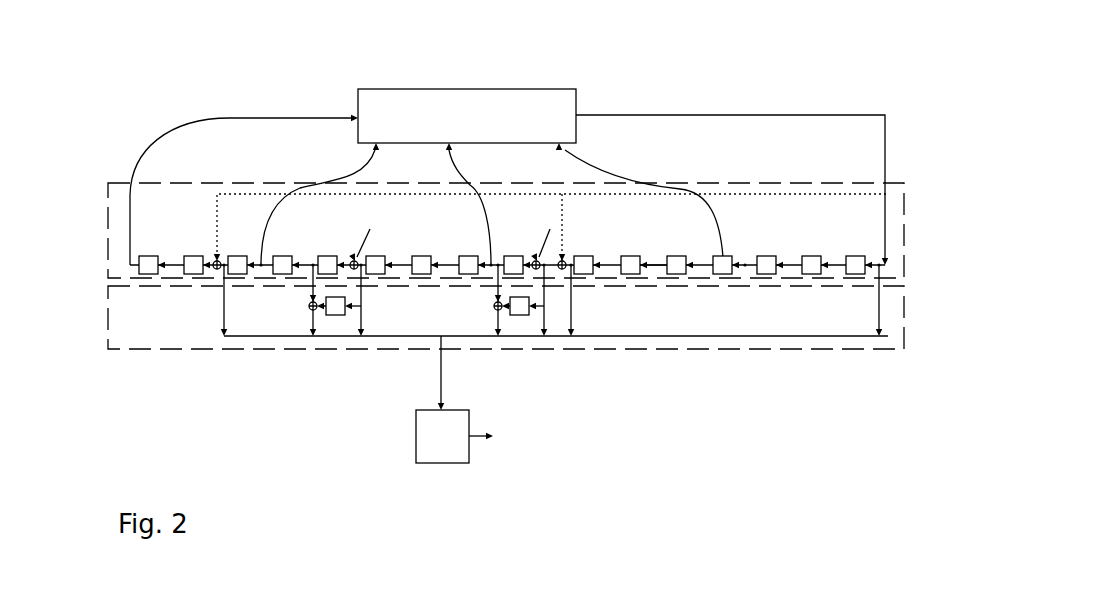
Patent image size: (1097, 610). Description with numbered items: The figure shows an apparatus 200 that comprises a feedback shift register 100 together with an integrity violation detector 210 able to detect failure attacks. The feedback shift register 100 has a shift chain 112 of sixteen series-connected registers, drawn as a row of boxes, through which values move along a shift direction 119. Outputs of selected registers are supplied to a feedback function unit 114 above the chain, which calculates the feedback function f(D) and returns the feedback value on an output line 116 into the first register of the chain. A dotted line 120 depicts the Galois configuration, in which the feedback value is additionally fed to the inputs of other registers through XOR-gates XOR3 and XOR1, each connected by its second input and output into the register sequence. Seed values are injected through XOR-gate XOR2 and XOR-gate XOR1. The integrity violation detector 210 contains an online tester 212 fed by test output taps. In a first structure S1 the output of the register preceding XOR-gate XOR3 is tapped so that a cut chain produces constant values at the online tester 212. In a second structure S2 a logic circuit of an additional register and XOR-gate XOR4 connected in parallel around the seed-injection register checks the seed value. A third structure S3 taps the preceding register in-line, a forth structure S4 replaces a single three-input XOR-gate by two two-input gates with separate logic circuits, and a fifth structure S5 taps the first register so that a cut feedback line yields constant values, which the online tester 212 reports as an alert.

The feedback shift register 100 is at (114, 106).
The shift chain 112 is at (906, 258).
The feedback function unit 114 is at (428, 103).
The output line 116 is at (880, 214).
The shift direction 119 is at (648, 263).
The dotted line 120 is at (788, 194).
The apparatus 200 is at (812, 82).
The integrity violation detector 210 is at (906, 335).
The online tester 212 is at (426, 445).
The XOR-gate XOR1 is at (536, 260).
The XOR-gate XOR2 is at (353, 260).
The XOR-gate XOR3 is at (215, 260).
The XOR-gate XOR4 is at (307, 306).
The first structure S1 is at (222, 352).
The second structure S2 is at (312, 350).
The third structure S3 is at (360, 348).
The forth structure S4 is at (516, 348).
The fifth structure S5 is at (866, 346).